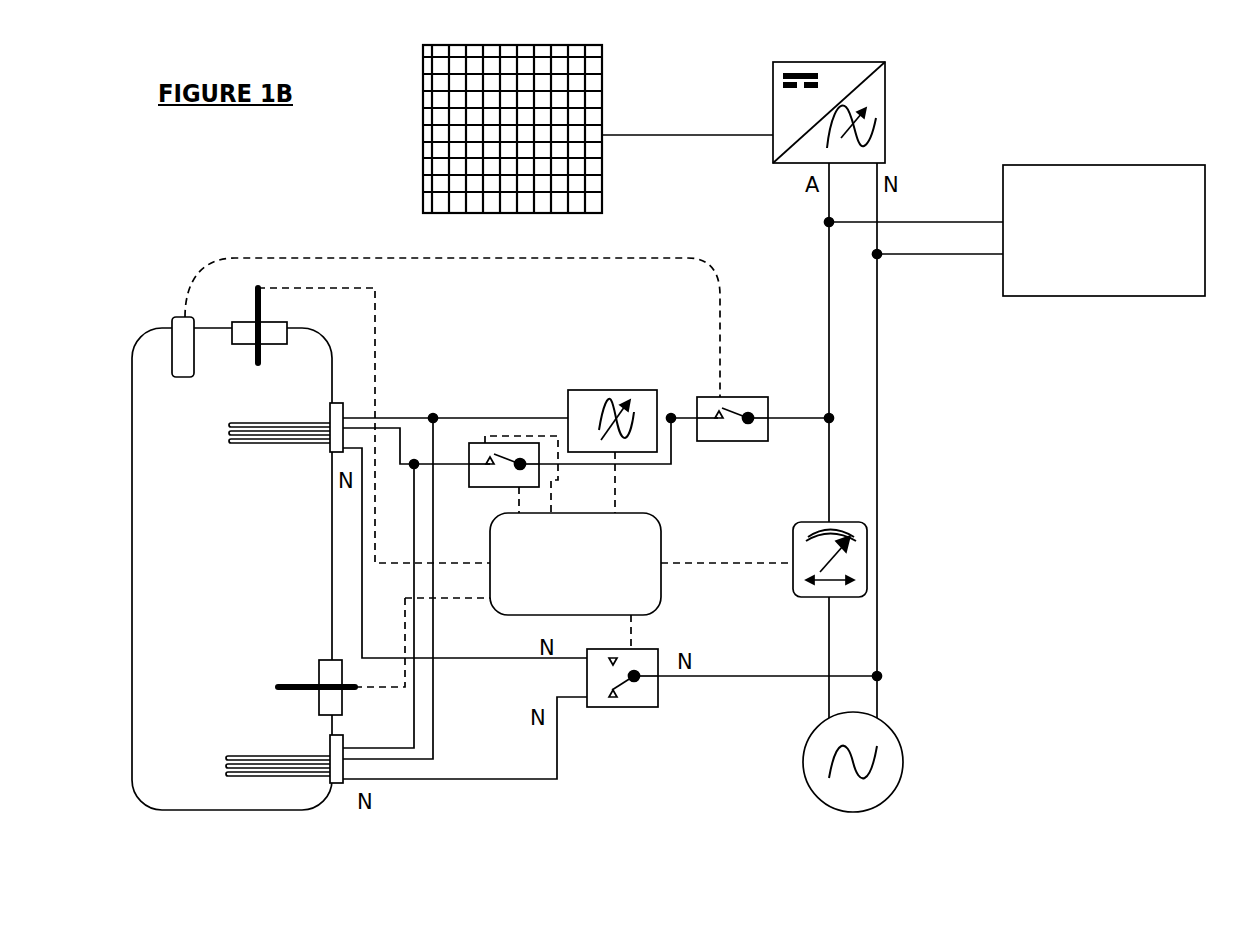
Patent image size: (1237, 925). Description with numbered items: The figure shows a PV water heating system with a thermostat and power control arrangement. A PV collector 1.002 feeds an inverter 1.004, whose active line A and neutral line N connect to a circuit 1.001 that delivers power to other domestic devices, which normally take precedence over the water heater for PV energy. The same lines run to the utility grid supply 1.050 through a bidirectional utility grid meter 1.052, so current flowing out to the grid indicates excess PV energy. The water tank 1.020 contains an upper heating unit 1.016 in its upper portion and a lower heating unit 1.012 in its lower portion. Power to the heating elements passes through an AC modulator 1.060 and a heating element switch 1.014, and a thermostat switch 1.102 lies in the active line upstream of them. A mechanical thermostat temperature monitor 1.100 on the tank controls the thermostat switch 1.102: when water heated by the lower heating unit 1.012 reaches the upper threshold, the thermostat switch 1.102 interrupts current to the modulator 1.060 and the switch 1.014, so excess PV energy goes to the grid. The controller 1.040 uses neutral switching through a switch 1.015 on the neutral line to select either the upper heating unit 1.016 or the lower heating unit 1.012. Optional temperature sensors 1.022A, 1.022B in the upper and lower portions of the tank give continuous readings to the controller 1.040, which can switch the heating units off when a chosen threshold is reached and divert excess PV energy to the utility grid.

The circuit 1.001 is at (1104, 215).
The PV collector 1.002 is at (546, 129).
The inverter 1.004 is at (864, 112).
The lower heating unit 1.012 is at (245, 759).
The heating element switches 1.014 is at (485, 443).
The neutral switch 1.015 is at (626, 699).
The upper heating unit 1.016 is at (246, 427).
The water tank 1.020 is at (232, 569).
The first temperature sensor 1.022A is at (276, 339).
The further temperature sensor 1.022B is at (290, 686).
The controller 1.040 is at (575, 564).
The utility grid supply 1.050 is at (885, 762).
The bidirectional utility grid meter 1.052 is at (810, 548).
The AC modulator 1.060 is at (612, 406).
The temperature monitor 1.100 is at (185, 361).
The thermostat switch 1.102 is at (743, 406).